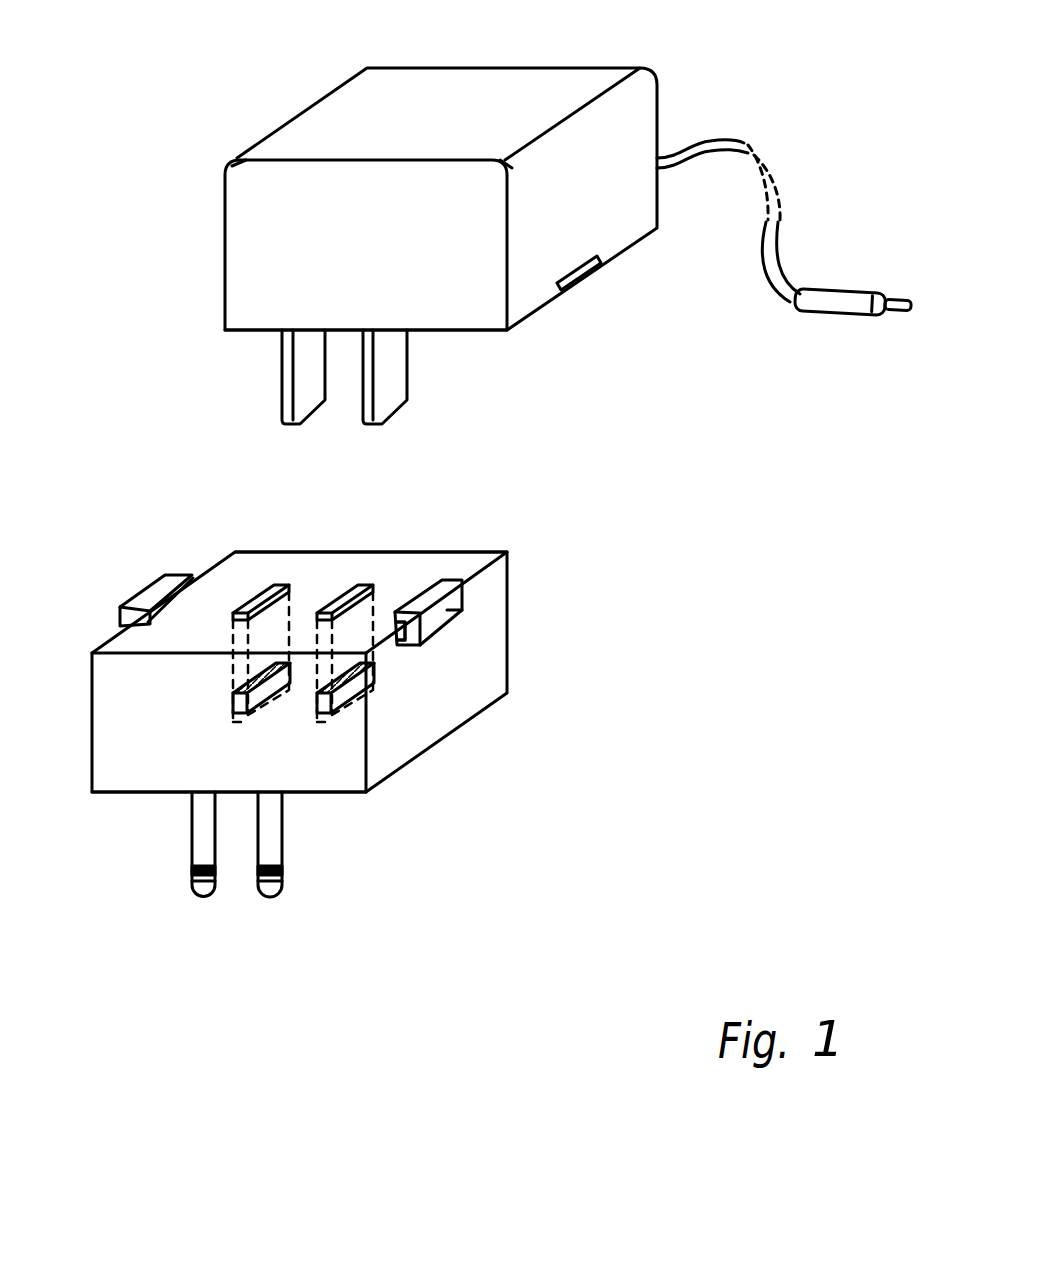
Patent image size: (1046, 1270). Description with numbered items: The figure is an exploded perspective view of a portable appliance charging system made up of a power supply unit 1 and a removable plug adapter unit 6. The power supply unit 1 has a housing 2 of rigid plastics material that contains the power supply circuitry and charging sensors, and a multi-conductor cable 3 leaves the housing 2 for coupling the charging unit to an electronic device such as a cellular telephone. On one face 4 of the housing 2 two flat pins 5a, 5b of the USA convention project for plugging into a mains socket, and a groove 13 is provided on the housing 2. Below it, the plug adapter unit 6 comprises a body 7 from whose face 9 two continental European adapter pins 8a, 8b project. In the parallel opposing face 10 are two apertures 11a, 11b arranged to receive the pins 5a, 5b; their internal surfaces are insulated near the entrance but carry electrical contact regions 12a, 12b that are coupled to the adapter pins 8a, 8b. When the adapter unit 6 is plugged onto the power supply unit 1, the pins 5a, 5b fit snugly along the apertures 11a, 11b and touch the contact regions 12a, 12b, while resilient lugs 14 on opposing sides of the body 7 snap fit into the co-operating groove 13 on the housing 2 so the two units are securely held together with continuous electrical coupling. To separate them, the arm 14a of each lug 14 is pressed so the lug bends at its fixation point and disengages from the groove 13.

The power supply unit 1 is at (694, 384).
The housing 2 is at (537, 288).
The multi-conductor cable 3 is at (703, 132).
The face of the housing 4 is at (455, 332).
The pin 5a is at (306, 381).
The pin 5b is at (387, 380).
The plug adapter unit 6 is at (582, 687).
The body 7 is at (437, 710).
The pin 8a is at (204, 845).
The pin 8b is at (266, 843).
The face of the body 9 is at (342, 795).
The opposing face 10 is at (420, 563).
The aperture 11a is at (261, 590).
The aperture 11b is at (339, 590).
The electrical contact region 12a is at (232, 703).
The electrical contact region 12b is at (330, 703).
The groove 13 is at (598, 268).
The resilient lug 14 is at (155, 597).
The arm 14a is at (420, 645).